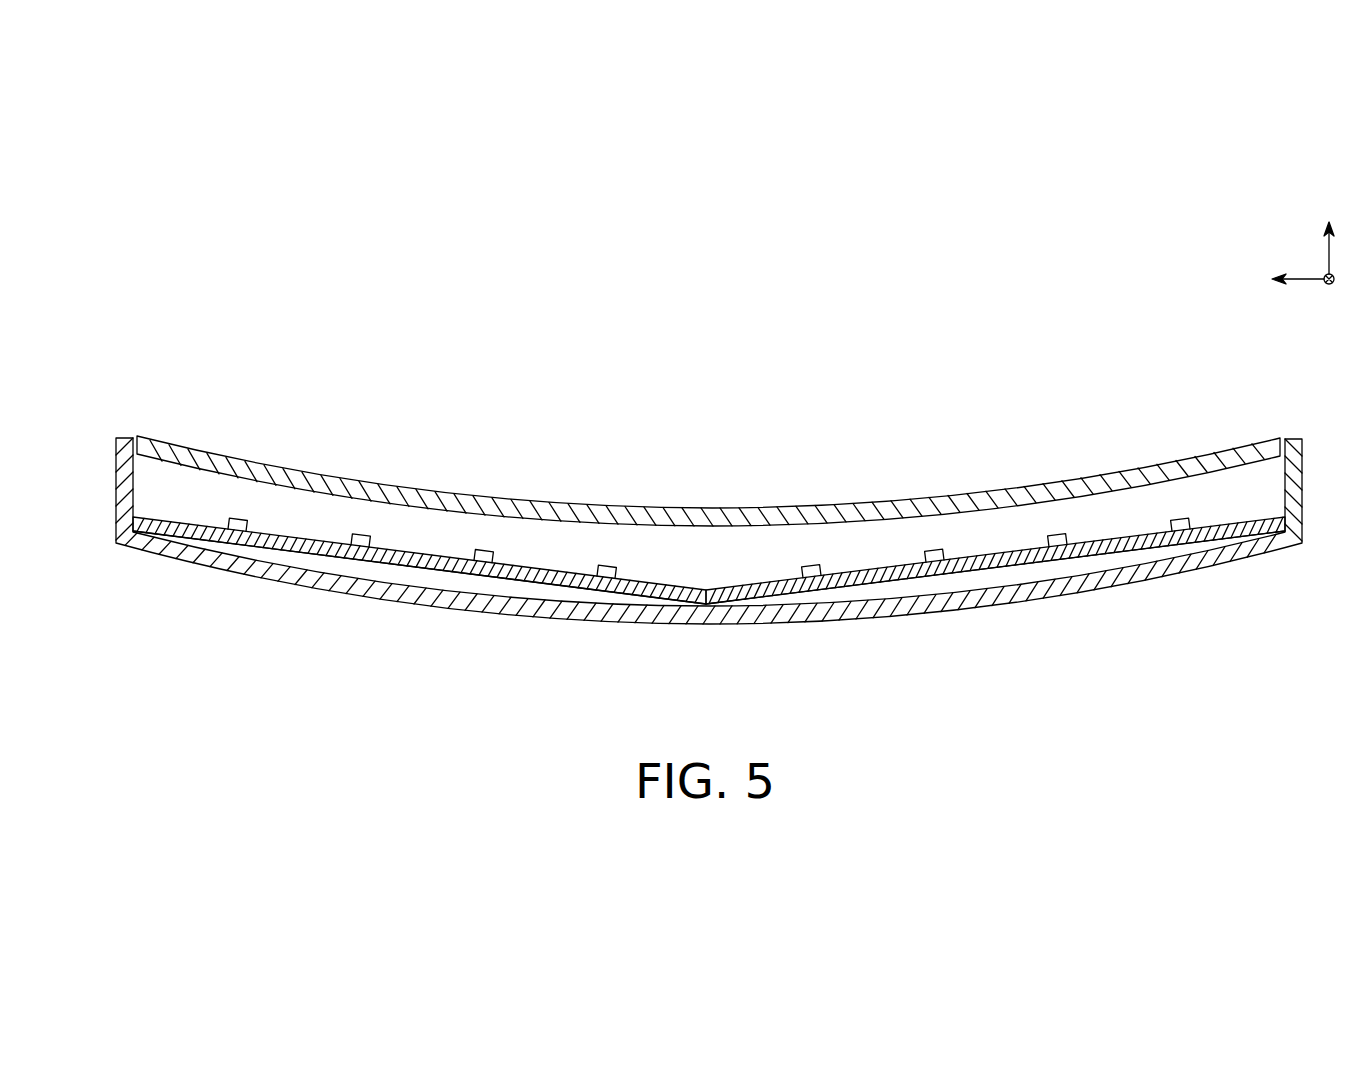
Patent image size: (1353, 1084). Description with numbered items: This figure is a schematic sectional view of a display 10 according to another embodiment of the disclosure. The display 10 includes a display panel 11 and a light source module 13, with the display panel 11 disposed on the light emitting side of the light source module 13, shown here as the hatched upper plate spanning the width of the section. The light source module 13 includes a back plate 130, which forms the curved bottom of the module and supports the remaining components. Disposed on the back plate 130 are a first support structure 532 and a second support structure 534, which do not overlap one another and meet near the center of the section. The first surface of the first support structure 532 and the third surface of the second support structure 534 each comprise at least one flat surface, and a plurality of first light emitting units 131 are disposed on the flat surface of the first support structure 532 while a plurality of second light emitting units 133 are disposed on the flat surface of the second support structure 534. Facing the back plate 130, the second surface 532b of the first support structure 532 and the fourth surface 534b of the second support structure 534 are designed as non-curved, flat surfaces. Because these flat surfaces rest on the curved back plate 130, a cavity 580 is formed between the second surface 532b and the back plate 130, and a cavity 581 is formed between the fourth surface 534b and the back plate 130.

The display 10 is at (95, 348).
The display panel 11 is at (1198, 455).
The light source module 13 is at (709, 570).
The back plate 130 is at (838, 607).
The first light emitting units 131 is at (933, 550).
The second light emitting units 133 is at (486, 550).
The first support structure 532 is at (932, 585).
The second surface 532b is at (1000, 570).
The second support structure 534 is at (405, 560).
The fourth surface 534b is at (520, 582).
The cavity 580 is at (1095, 567).
The cavity 581 is at (548, 594).